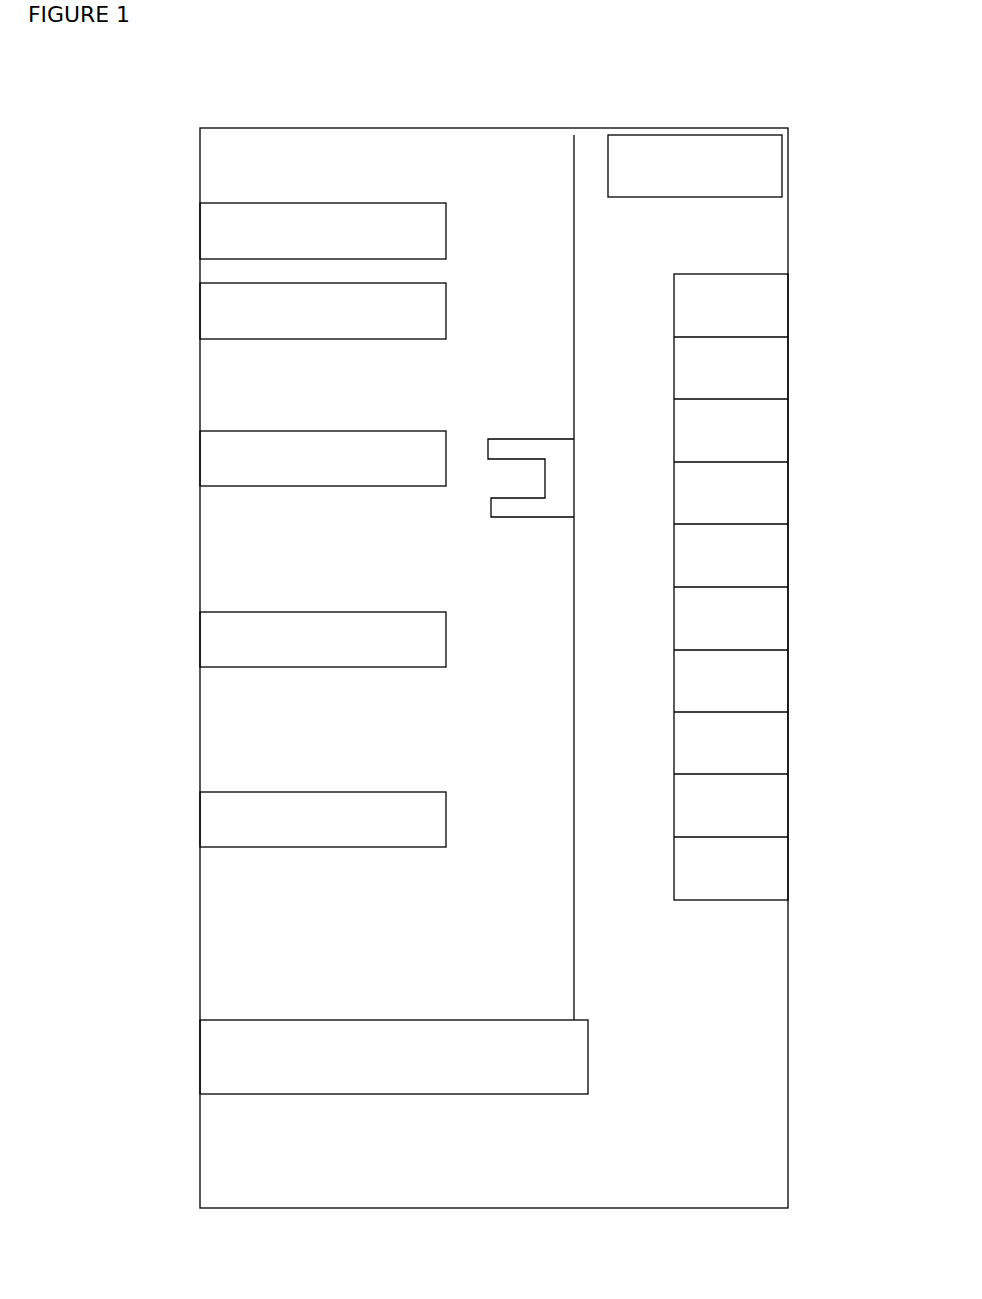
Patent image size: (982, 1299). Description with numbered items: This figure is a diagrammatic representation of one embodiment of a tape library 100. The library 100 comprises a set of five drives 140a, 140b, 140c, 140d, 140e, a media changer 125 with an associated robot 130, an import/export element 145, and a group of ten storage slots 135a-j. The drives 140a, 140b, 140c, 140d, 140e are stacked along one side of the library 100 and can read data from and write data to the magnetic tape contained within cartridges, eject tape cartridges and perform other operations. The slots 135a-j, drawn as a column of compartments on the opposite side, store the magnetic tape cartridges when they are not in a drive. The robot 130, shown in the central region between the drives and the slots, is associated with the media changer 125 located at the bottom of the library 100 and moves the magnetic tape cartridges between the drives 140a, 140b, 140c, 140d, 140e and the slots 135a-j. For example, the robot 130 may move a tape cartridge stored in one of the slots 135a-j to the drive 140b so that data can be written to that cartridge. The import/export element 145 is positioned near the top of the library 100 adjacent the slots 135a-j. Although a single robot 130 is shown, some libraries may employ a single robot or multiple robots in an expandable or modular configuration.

The library 100 is at (178, 118).
The media changer 125 is at (315, 1018).
The robot 130 is at (512, 520).
The slots 135a-j is at (786, 270).
The drive 140a is at (346, 202).
The drive 140b is at (329, 341).
The drive 140c is at (320, 430).
The drive 140d is at (262, 611).
The drive 140e is at (324, 791).
The import/export element 145 is at (596, 140).